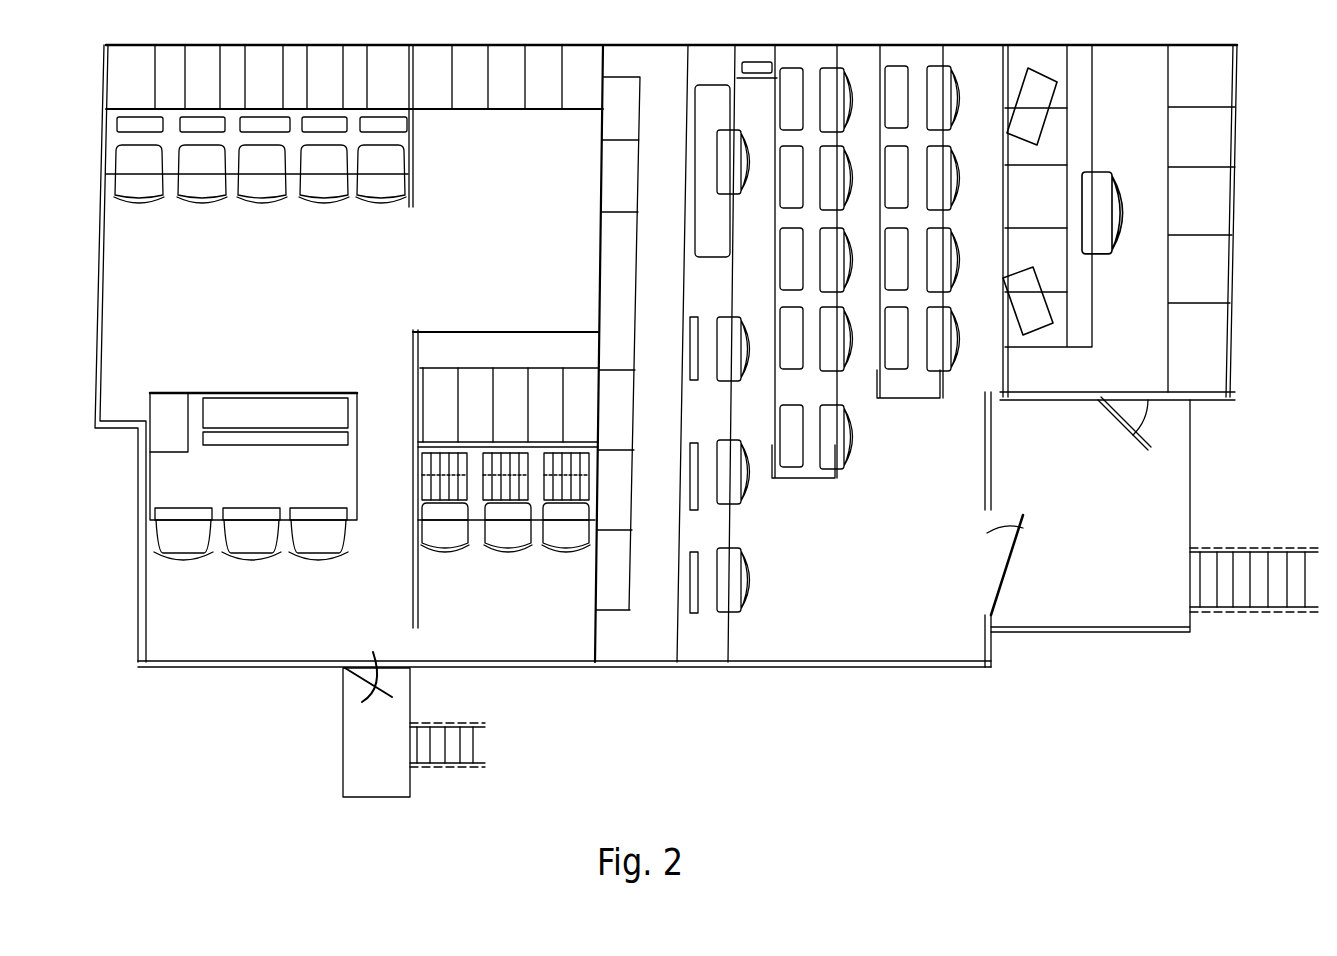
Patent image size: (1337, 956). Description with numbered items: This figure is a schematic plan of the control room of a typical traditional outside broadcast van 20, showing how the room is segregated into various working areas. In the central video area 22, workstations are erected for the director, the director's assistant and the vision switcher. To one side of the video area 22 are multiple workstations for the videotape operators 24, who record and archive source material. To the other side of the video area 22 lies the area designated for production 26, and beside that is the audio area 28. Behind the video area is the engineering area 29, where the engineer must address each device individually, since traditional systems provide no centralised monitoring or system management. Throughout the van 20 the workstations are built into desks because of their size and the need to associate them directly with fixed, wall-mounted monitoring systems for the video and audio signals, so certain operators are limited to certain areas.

The outside broadcast van 20 is at (1059, 757).
The video area 22 is at (505, 492).
The videotape operators area 24 is at (354, 302).
The production area 26 is at (897, 349).
The audio area 28 is at (1117, 247).
The engineering area 29 is at (518, 140).